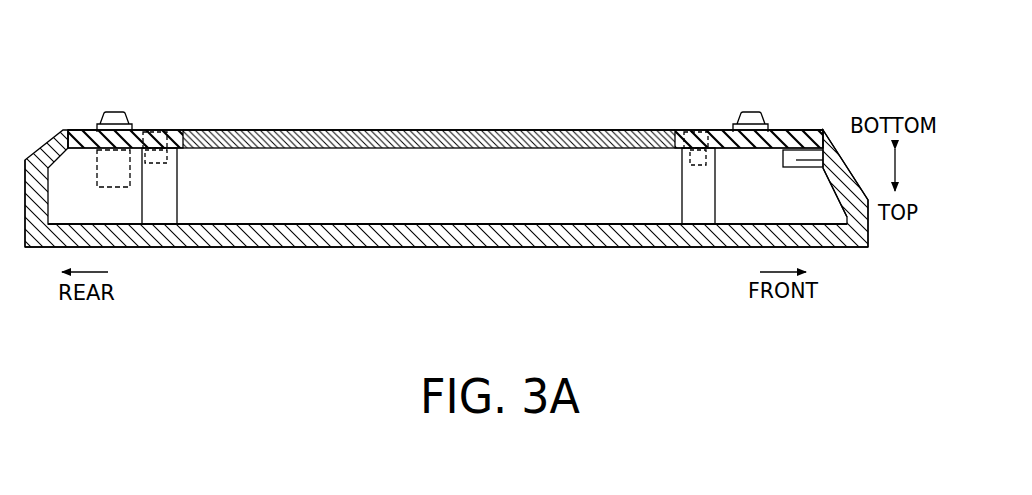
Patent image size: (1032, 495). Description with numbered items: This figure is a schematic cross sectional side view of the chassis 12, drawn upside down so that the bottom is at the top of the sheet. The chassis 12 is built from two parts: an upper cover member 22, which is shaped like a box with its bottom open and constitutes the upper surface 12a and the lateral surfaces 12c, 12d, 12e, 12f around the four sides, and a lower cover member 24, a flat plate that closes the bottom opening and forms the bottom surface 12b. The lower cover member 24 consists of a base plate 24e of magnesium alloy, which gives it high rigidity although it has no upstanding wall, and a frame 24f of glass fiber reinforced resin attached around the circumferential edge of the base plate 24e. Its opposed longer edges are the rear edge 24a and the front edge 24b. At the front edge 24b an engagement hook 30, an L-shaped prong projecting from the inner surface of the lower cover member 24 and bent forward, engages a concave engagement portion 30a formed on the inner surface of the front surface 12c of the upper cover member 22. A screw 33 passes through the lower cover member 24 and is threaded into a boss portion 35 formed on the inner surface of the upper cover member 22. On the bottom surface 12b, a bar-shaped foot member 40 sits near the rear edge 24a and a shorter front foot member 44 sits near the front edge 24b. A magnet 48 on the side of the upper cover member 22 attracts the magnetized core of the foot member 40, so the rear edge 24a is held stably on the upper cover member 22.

The chassis 12 is at (70, 30).
The upper surface 12a is at (318, 248).
The bottom surface 12b is at (290, 130).
The front surface 12c is at (869, 232).
The lateral surface 12d is at (26, 222).
The lateral surface 12e is at (520, 203).
The lateral surface 12f is at (517, 275).
The upper cover member 22 is at (422, 252).
The lower cover member 24 is at (426, 124).
The rear edge 24a is at (60, 132).
The front edge 24b is at (827, 133).
The base plate 24e is at (360, 140).
The frame 24f is at (78, 130).
The engagement hook 30 is at (793, 162).
The concave engagement portion 30a is at (840, 150).
The screw 33 is at (160, 165).
The boss portion 35 is at (170, 190).
The foot member 40 is at (117, 110).
The front foot member 44 is at (758, 113).
The magnet 48 is at (127, 188).